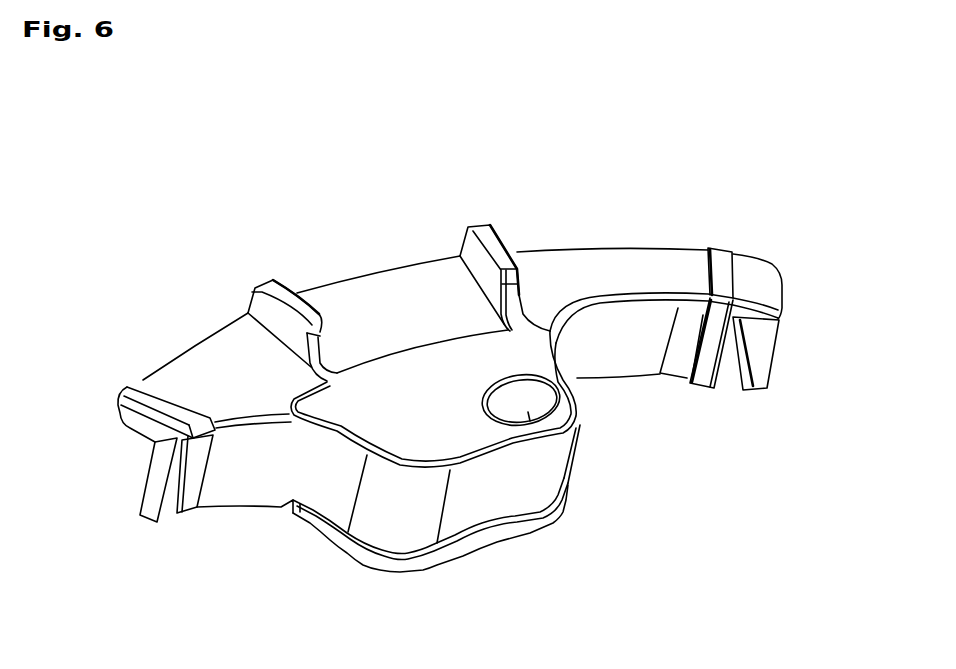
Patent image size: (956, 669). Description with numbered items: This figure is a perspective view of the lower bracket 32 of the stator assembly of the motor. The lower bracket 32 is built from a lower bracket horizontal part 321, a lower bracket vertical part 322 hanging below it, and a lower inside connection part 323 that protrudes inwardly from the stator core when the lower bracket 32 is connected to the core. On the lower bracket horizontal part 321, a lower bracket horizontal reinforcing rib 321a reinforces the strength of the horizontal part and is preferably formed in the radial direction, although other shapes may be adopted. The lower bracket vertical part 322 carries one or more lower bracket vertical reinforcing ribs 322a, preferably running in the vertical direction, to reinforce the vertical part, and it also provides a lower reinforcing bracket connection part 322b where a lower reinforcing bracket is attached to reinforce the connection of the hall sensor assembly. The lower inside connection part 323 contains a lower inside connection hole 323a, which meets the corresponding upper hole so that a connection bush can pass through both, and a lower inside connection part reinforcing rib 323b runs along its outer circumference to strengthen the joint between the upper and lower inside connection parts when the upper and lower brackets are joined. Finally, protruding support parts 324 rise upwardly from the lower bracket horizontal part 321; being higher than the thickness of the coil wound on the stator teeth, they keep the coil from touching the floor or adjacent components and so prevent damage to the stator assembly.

The lower bracket 32 is at (612, 196).
The lower bracket horizontal part 321 is at (560, 262).
The lower bracket horizontal reinforcing rib 321a is at (140, 387).
The lower bracket vertical part 322 is at (608, 367).
The lower bracket vertical reinforcing rib 322a is at (705, 384).
The lower reinforcing bracket connection part 322b is at (740, 360).
The lower inside connection part 323 is at (390, 537).
The lower inside connection hole 323a is at (512, 393).
The lower inside connection part reinforcing rib 323b is at (456, 548).
The protruding support part 324 is at (258, 288).